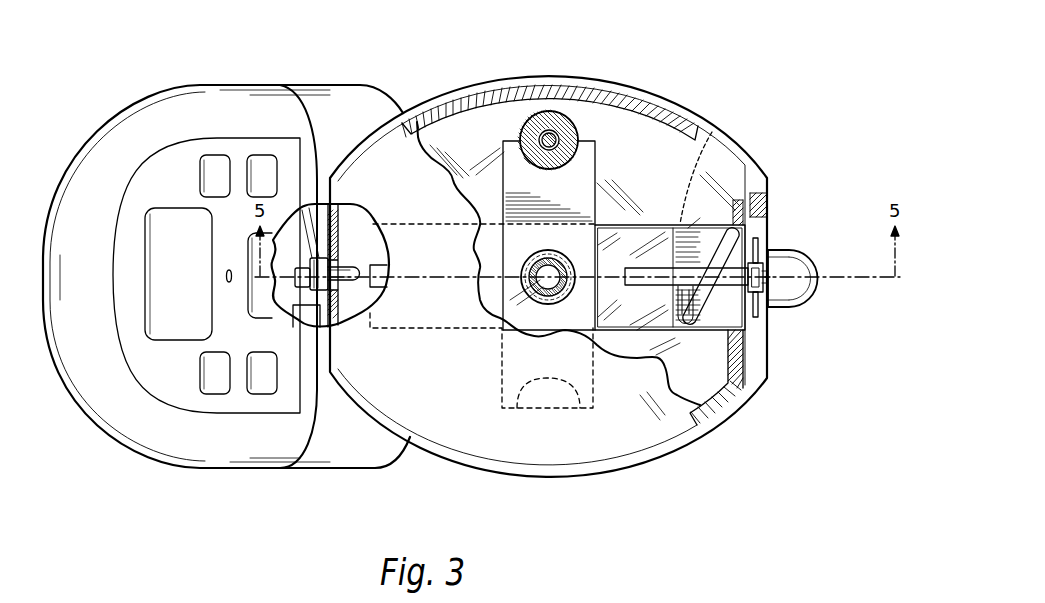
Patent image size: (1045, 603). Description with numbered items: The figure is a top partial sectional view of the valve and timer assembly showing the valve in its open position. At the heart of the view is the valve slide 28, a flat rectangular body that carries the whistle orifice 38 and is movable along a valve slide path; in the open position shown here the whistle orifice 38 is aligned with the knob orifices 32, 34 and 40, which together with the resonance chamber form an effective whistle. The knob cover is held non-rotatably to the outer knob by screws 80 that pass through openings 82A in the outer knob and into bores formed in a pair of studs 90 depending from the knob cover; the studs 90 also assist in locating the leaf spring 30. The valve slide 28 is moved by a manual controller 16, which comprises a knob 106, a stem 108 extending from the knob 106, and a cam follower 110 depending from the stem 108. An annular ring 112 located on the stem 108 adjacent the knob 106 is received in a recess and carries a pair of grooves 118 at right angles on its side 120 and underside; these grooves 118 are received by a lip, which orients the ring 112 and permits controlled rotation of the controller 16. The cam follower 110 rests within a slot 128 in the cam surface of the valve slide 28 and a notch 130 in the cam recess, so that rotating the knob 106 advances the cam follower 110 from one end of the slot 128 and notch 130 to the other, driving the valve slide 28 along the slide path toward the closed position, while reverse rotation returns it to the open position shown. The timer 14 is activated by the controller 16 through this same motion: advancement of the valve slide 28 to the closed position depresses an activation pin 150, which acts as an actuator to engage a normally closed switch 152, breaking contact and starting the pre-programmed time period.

The timer 14 is at (130, 98).
The manual controller 16 is at (818, 276).
The valve slide 28 is at (627, 322).
The leaf spring 30 is at (422, 118).
The orifice 32 is at (548, 283).
The orifice 34 is at (596, 332).
The whistle orifice 38 is at (578, 262).
The orifice 40 is at (568, 300).
The screws 80 is at (517, 182).
The openings 82A is at (532, 112).
The studs 90 is at (562, 125).
The knob 106 is at (790, 264).
The stem 108 is at (762, 330).
The cam follower 110 is at (737, 410).
The annular ring 112 is at (761, 266).
The grooves 118 is at (728, 287).
The side 120 is at (762, 296).
The slot 128 is at (723, 263).
The notch 130 is at (718, 132).
The activation pin 150 is at (340, 218).
The switch 152 is at (303, 262).